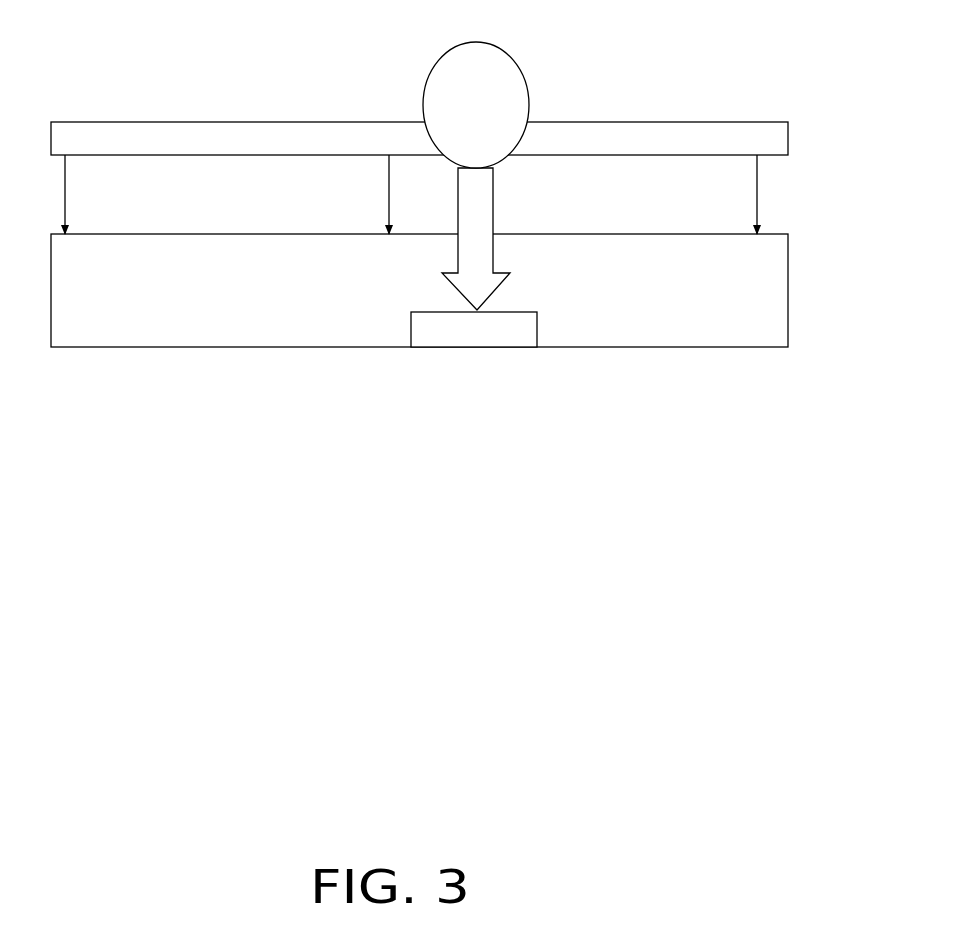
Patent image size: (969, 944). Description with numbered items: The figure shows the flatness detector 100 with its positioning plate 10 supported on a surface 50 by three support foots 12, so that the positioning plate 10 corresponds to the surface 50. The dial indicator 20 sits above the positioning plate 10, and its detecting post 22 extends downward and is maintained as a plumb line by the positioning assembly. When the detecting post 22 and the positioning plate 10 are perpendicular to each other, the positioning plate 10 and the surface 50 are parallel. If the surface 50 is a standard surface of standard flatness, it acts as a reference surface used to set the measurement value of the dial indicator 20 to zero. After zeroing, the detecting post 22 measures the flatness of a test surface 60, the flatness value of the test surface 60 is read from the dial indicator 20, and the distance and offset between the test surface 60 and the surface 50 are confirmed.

The flatness detector 100 is at (375, 40).
The positioning plate 10 is at (678, 120).
The support foots 12 is at (389, 190).
The dial indicator 20 is at (499, 49).
The detecting post 22 is at (495, 215).
The surface 50 is at (685, 233).
The test surface 60 is at (500, 330).